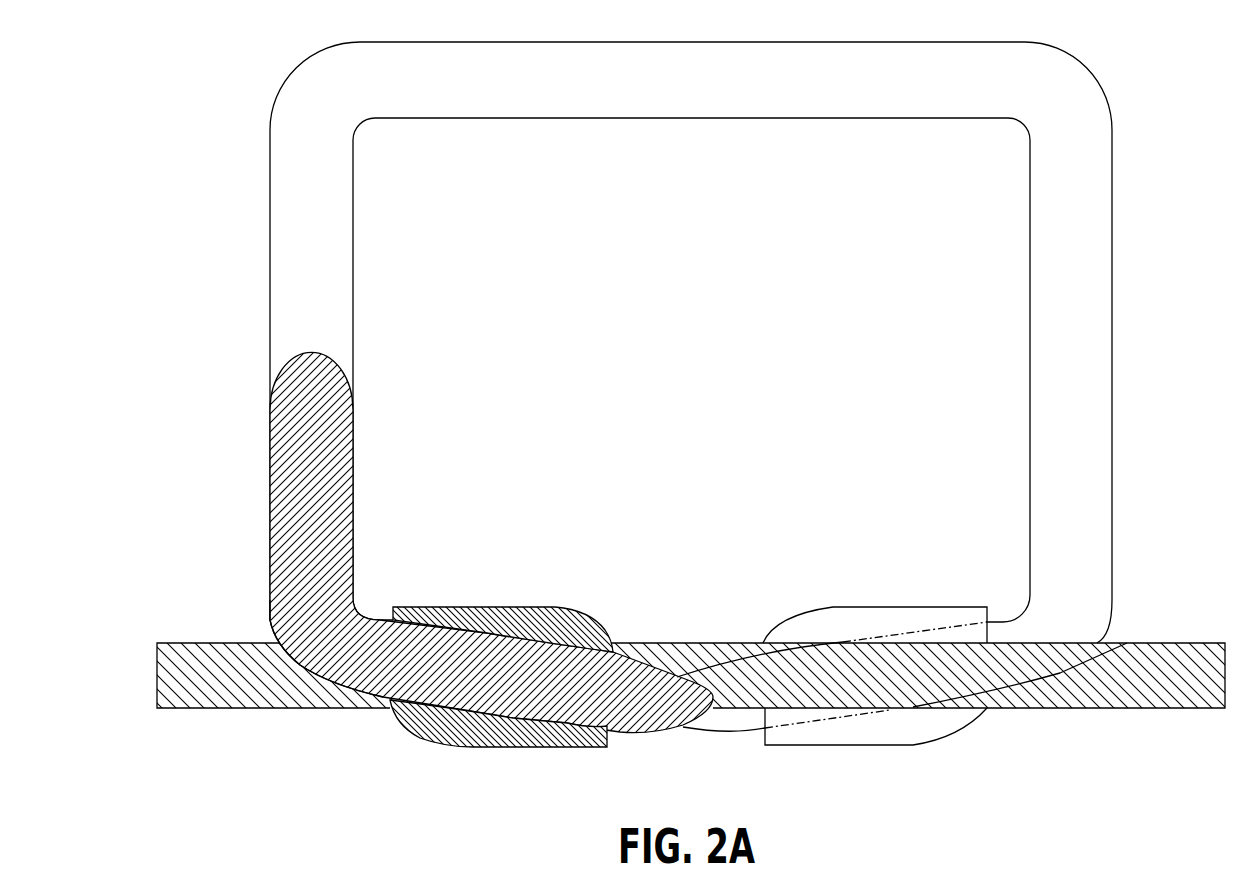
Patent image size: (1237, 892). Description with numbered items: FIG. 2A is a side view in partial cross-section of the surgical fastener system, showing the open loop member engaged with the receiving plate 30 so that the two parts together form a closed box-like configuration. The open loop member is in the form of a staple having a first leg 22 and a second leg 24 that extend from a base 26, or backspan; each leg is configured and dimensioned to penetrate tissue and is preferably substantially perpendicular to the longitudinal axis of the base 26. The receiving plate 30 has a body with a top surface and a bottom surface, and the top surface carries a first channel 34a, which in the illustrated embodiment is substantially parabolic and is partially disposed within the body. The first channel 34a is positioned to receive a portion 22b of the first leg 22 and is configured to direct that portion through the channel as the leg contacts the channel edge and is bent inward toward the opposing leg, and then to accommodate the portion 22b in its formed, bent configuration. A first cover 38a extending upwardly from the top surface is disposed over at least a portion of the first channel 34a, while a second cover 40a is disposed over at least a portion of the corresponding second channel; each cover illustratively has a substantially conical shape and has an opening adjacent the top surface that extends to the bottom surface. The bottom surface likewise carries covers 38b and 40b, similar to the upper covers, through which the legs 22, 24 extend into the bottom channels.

The first leg 22 is at (268, 228).
The portion of the first leg 22b is at (595, 684).
The second leg 24 is at (1112, 228).
The base 26 is at (700, 41).
The receiving plate 30 is at (1130, 687).
The first channel 34a is at (262, 628).
The first cover 38a is at (537, 607).
The cover on bottom surface 38b is at (463, 748).
The second cover 40a is at (873, 605).
The cover on bottom surface 40b is at (893, 725).